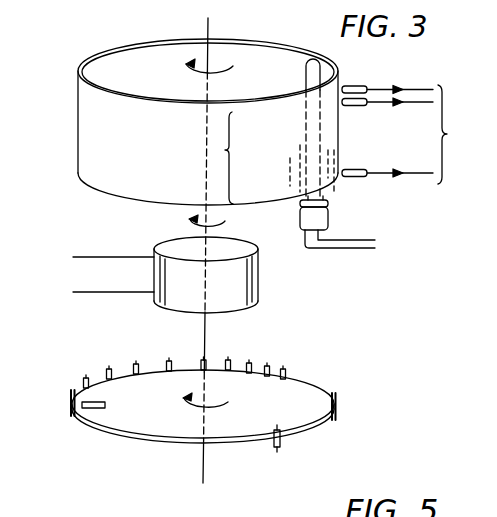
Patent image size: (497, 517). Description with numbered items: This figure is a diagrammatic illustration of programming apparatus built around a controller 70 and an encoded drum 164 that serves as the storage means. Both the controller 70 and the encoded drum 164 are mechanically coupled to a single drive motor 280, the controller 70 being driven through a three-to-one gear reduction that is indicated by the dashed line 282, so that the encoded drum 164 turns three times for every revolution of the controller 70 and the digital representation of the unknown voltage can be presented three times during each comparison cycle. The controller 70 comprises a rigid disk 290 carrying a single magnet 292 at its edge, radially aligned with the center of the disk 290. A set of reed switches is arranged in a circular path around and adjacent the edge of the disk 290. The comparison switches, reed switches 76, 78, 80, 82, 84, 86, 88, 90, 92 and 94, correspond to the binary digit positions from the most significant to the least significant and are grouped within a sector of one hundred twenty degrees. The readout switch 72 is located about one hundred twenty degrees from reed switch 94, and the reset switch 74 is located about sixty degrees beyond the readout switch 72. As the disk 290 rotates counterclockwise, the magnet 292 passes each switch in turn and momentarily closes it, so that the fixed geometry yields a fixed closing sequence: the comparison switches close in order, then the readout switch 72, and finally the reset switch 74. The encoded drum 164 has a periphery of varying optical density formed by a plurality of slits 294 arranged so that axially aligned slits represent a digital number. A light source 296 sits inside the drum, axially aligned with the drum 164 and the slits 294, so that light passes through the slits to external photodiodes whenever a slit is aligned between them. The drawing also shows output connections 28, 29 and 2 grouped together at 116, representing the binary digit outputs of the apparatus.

The encoded drum 164 is at (88, 125).
The slits 294 is at (225, 150).
The light source 296 is at (311, 79).
The connector pin assembly 116 is at (409, 124).
The first connector pin 29 is at (422, 90).
The second connector pin 28 is at (418, 104).
The third connector pin 2 is at (418, 174).
The drive motor 280 is at (222, 294).
The gear reduction 282 is at (205, 327).
The disk 290 is at (177, 433).
The magnet 292 is at (106, 405).
The controller 70 is at (65, 351).
The reed switch 92 is at (83, 376).
The reed switch 90 is at (107, 368).
The reed switch 88 is at (135, 362).
The reed switch 86 is at (167, 360).
The reed switch 84 is at (200, 360).
The reed switch 82 is at (228, 361).
The reed switch 80 is at (250, 364).
The reed switch 78 is at (270, 368).
The reed switch 76 is at (287, 372).
The reed switch 94 is at (70, 395).
The reset switch 74 is at (337, 407).
The readout switch 72 is at (282, 441).